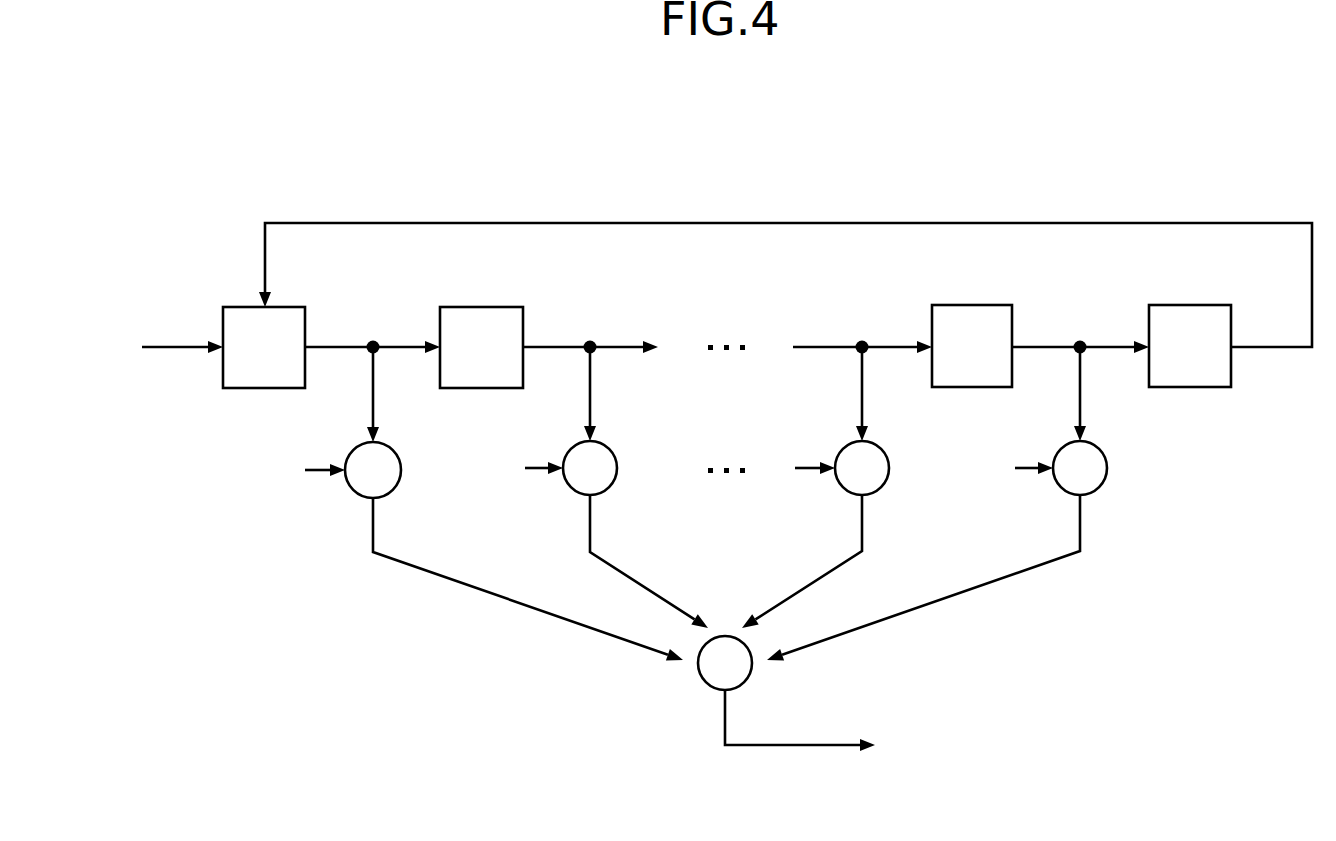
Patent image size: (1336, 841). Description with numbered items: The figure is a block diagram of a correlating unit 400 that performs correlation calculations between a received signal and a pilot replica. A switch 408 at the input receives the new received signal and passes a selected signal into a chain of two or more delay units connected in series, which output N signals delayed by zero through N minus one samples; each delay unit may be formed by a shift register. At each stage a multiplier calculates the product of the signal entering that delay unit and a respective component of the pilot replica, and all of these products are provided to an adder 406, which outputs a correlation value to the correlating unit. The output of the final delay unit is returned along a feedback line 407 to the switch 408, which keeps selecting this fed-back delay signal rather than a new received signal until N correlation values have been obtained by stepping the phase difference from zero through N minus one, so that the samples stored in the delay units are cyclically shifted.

The correlating unit 400 is at (104, 208).
The adder 406 is at (698, 682).
The feedback line 407 is at (787, 222).
The switch 408 is at (292, 305).